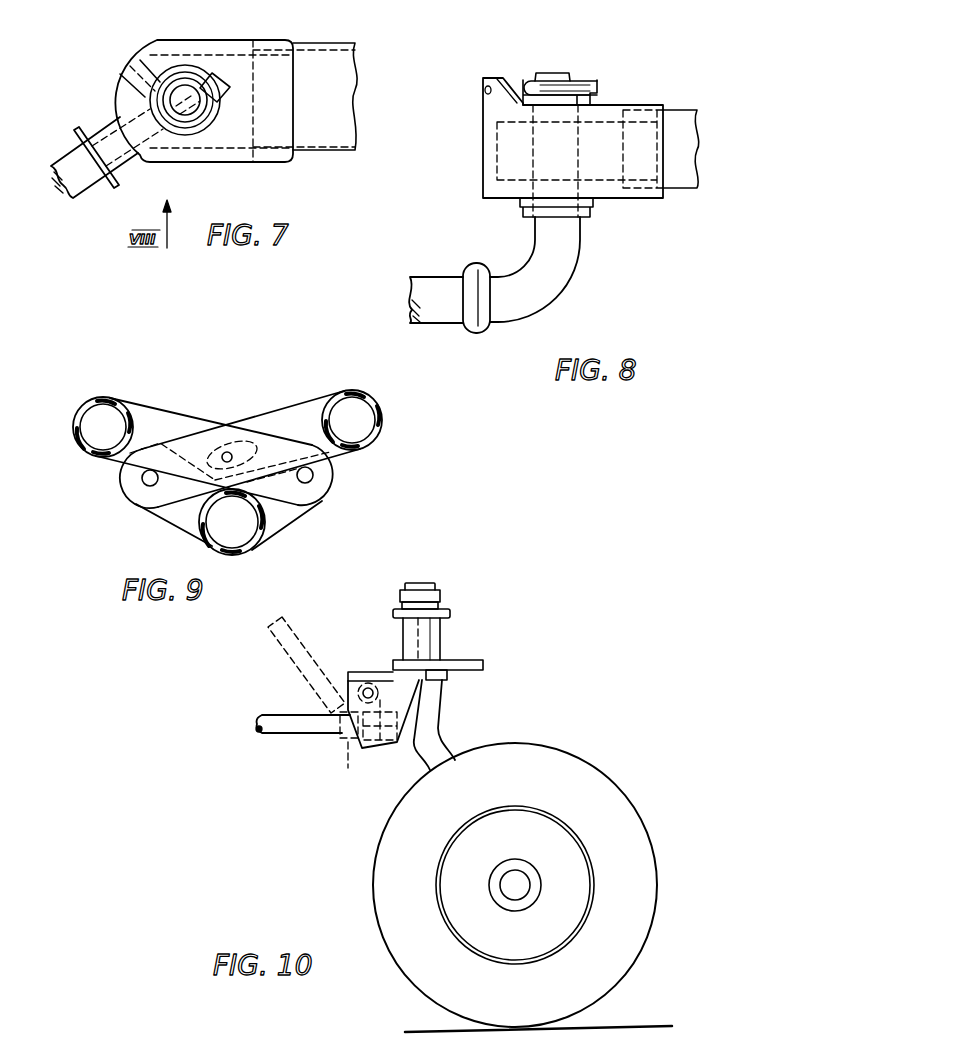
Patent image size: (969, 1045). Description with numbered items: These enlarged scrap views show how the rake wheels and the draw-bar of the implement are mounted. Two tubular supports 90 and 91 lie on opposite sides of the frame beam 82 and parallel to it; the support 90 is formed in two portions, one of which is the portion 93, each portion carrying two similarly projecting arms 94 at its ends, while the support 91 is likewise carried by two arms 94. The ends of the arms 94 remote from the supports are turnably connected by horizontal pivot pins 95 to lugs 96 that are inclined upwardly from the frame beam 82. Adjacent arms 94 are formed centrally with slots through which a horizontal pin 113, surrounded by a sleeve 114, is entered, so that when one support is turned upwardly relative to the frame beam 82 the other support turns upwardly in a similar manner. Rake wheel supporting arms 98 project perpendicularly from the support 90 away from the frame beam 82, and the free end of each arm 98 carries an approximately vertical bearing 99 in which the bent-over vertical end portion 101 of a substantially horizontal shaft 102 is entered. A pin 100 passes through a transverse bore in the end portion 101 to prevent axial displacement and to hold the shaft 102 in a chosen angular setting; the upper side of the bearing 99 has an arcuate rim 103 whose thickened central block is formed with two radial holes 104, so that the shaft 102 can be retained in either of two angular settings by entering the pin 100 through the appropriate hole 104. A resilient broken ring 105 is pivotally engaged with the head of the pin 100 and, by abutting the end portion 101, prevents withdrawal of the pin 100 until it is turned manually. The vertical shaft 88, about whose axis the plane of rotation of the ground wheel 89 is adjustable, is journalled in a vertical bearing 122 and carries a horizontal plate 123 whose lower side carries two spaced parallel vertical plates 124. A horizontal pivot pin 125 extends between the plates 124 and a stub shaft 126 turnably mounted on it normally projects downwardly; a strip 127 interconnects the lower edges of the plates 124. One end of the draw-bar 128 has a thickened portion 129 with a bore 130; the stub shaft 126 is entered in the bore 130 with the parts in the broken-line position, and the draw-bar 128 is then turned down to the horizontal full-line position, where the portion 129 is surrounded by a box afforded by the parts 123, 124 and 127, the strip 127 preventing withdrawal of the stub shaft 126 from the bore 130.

In FIG. 9, the frame beam 82 is at (242, 555).
In FIG. 10, the vertical shaft 88 is at (430, 727).
In FIG. 10, the ground wheel 89 is at (385, 858).
In FIG. 9, the tubular support 90 is at (88, 398).
In FIG. 9, the tubular support 91 is at (355, 393).
In FIG. 9, the support portion 93 is at (118, 400).
In FIG. 9, the projecting arm 94 is at (165, 410).
In FIG. 9, the horizontal pivot pin 95 is at (322, 473).
In FIG. 9, the lug 96 is at (172, 522).
In FIG. 7, the rake wheel supporting arm 98 is at (355, 112).
In FIG. 8, the rake wheel supporting arm 98 is at (680, 110).
In FIG. 7, the bearing 99 is at (237, 62).
In FIG. 8, the bearing 99 is at (635, 190).
In FIG. 7, the pin 100 is at (240, 84).
In FIG. 8, the pin 100 is at (598, 89).
In FIG. 7, the end portion 101 is at (186, 95).
In FIG. 8, the end portion 101 is at (553, 73).
In FIG. 7, the shaft 102 is at (95, 181).
In FIG. 8, the shaft 102 is at (432, 287).
In FIG. 7, the arcuate rim 103 is at (128, 48).
In FIG. 8, the arcuate rim 103 is at (483, 122).
In FIG. 7, the hole 104 is at (122, 70).
In FIG. 7, the broken ring 105 is at (232, 115).
In FIG. 8, the broken ring 105 is at (527, 78).
In FIG. 9, the horizontal pin 113 is at (226, 452).
In FIG. 9, the sleeve 114 is at (230, 459).
In FIG. 10, the vertical bearing 122 is at (440, 600).
In FIG. 10, the horizontal plate 123 is at (375, 672).
In FIG. 10, the vertical plate 124 is at (437, 683).
In FIG. 10, the horizontal pivot pin 125 is at (355, 673).
In FIG. 10, the stub shaft 126 is at (343, 767).
In FIG. 10, the strip 127 is at (392, 744).
In FIG. 10, the draw-bar 128 is at (268, 632).
In FIG. 10, the thickened portion 129 is at (342, 737).
In FIG. 10, the bore 130 is at (386, 692).